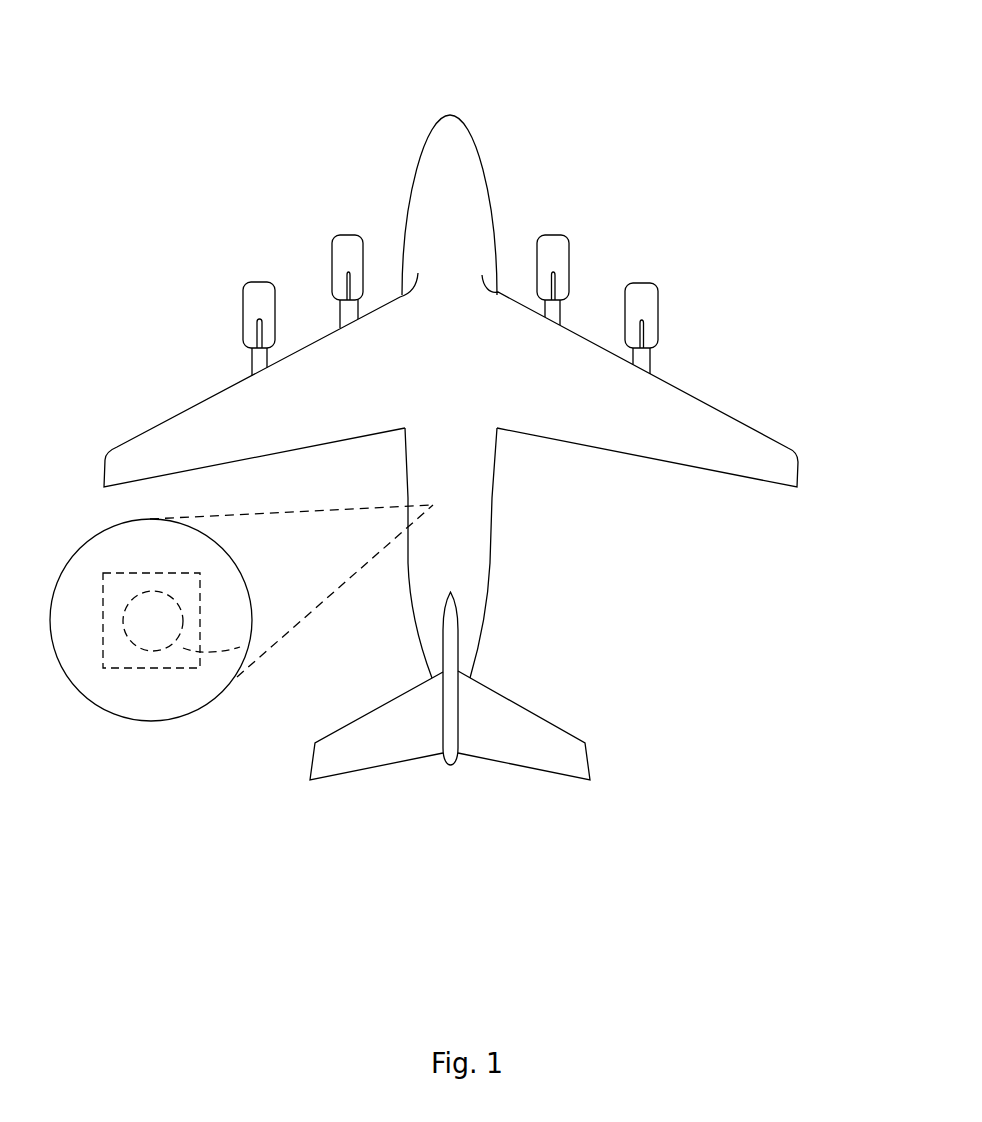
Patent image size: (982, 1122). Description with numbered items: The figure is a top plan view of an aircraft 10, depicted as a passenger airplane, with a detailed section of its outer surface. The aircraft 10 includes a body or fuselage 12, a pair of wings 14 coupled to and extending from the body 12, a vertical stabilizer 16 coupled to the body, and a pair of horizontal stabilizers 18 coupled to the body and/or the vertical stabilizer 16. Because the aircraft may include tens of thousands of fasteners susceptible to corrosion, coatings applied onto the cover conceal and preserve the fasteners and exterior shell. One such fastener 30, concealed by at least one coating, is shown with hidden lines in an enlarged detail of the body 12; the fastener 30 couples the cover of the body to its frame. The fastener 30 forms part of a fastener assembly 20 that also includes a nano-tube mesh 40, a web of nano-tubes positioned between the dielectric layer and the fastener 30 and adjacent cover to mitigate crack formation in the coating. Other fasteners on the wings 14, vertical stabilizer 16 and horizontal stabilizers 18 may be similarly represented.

The aircraft 10 is at (454, 430).
The fuselage 12 is at (485, 176).
The wings 14 is at (178, 427).
The vertical stabilizer 16 is at (452, 710).
The horizontal stabilizers 18 is at (538, 735).
The fastener assembly 20 is at (123, 671).
The fastener 30 is at (125, 622).
The nano-tube mesh 40 is at (240, 647).